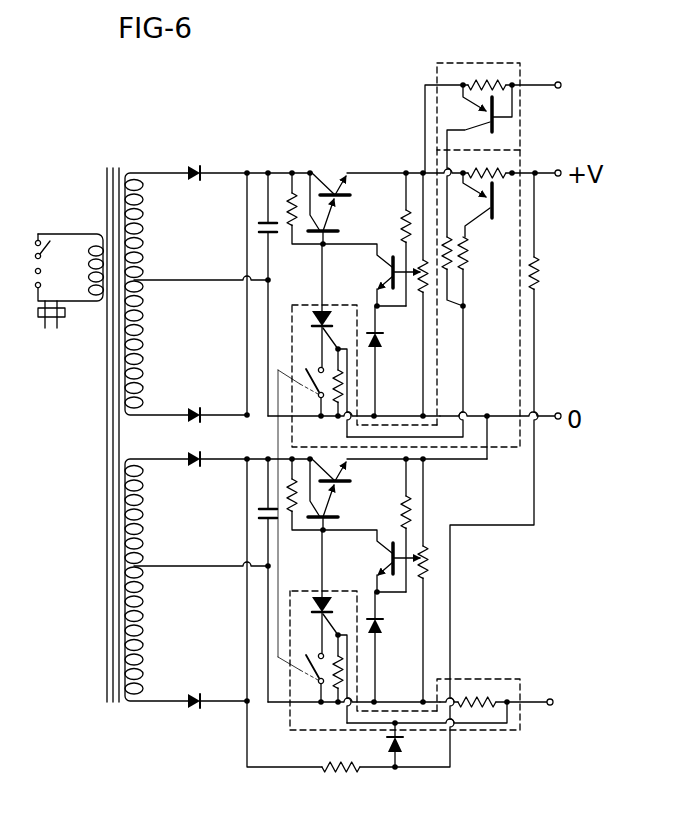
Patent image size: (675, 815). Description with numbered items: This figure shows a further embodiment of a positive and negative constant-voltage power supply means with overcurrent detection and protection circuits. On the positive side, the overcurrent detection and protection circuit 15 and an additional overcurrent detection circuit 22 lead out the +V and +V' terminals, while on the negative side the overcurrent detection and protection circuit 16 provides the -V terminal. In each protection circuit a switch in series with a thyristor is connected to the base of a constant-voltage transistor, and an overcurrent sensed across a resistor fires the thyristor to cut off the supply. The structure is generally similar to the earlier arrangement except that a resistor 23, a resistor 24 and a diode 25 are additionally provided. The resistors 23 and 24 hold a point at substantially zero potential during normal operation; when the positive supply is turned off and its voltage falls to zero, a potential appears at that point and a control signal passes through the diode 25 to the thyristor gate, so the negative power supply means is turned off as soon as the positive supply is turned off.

The overcurrent detection and protection circuit 15 is at (520, 320).
The overcurrent detection and protection circuit 16 is at (492, 679).
The overcurrent detection circuit 22 is at (500, 62).
The resistor 23 is at (550, 273).
The resistor 24 is at (358, 783).
The diode 25 is at (415, 745).